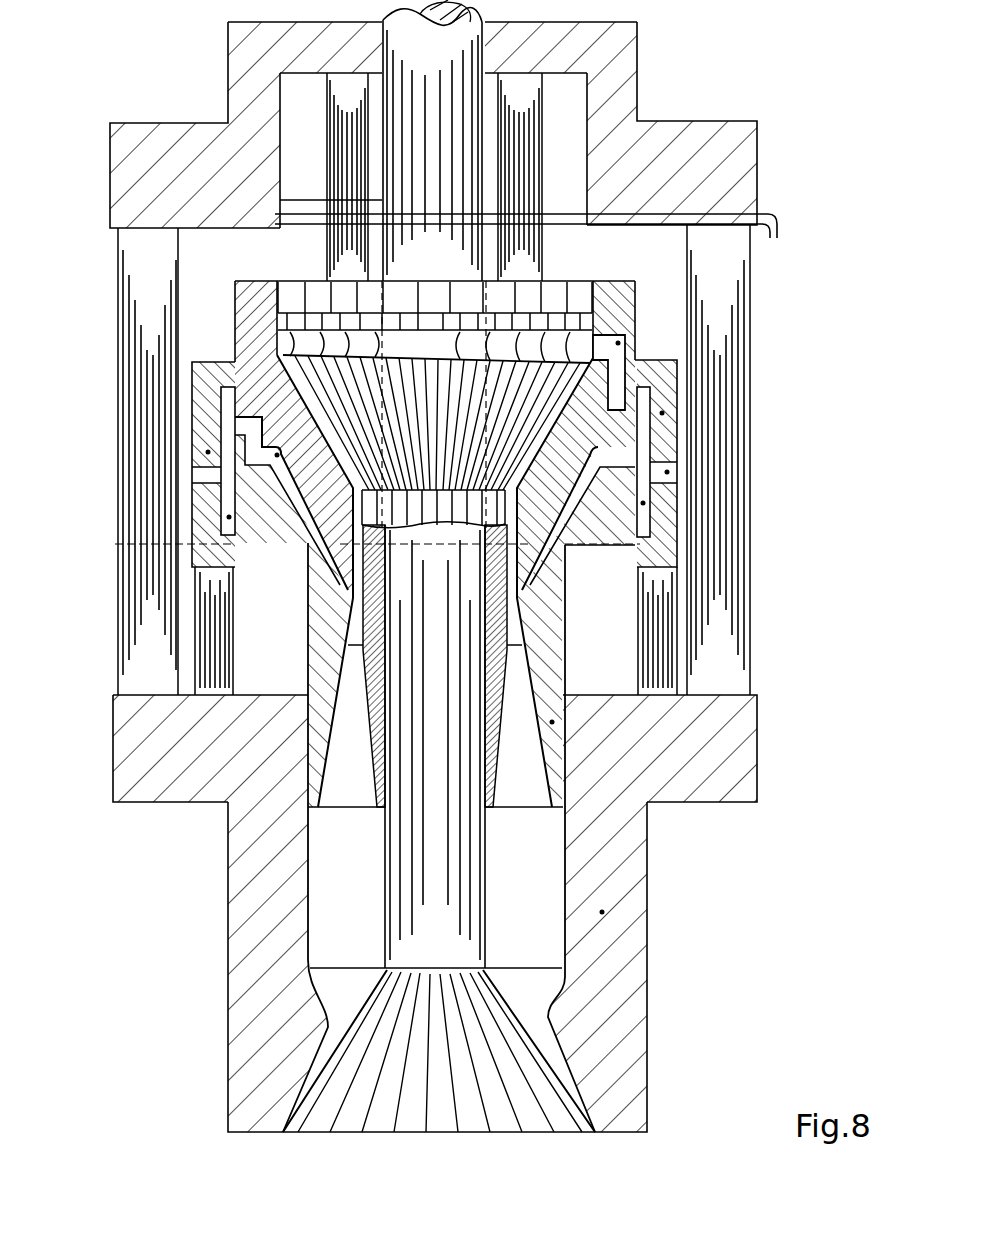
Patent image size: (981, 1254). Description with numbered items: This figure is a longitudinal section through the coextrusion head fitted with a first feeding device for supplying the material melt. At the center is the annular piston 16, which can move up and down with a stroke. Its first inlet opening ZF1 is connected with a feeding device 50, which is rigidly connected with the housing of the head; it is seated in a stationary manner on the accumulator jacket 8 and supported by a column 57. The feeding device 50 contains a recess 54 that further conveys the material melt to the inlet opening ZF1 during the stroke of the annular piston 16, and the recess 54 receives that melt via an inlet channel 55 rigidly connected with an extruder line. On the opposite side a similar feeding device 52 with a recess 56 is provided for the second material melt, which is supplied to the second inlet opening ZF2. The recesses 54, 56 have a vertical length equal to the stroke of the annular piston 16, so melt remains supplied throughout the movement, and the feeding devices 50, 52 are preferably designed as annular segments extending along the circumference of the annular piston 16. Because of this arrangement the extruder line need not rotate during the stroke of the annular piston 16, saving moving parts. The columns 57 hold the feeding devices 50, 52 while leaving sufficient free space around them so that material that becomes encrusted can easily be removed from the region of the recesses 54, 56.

The accumulator jacket 8 is at (602, 912).
The annular piston 16 is at (552, 722).
The feeding device 50 is at (662, 413).
The feeding device 52 is at (208, 452).
The recess 54 is at (643, 503).
The inlet channel 55 is at (667, 472).
The recess 56 is at (229, 517).
The column 57 is at (147, 655).
The first inlet opening ZF1 is at (618, 343).
The second inlet opening ZF2 is at (277, 455).